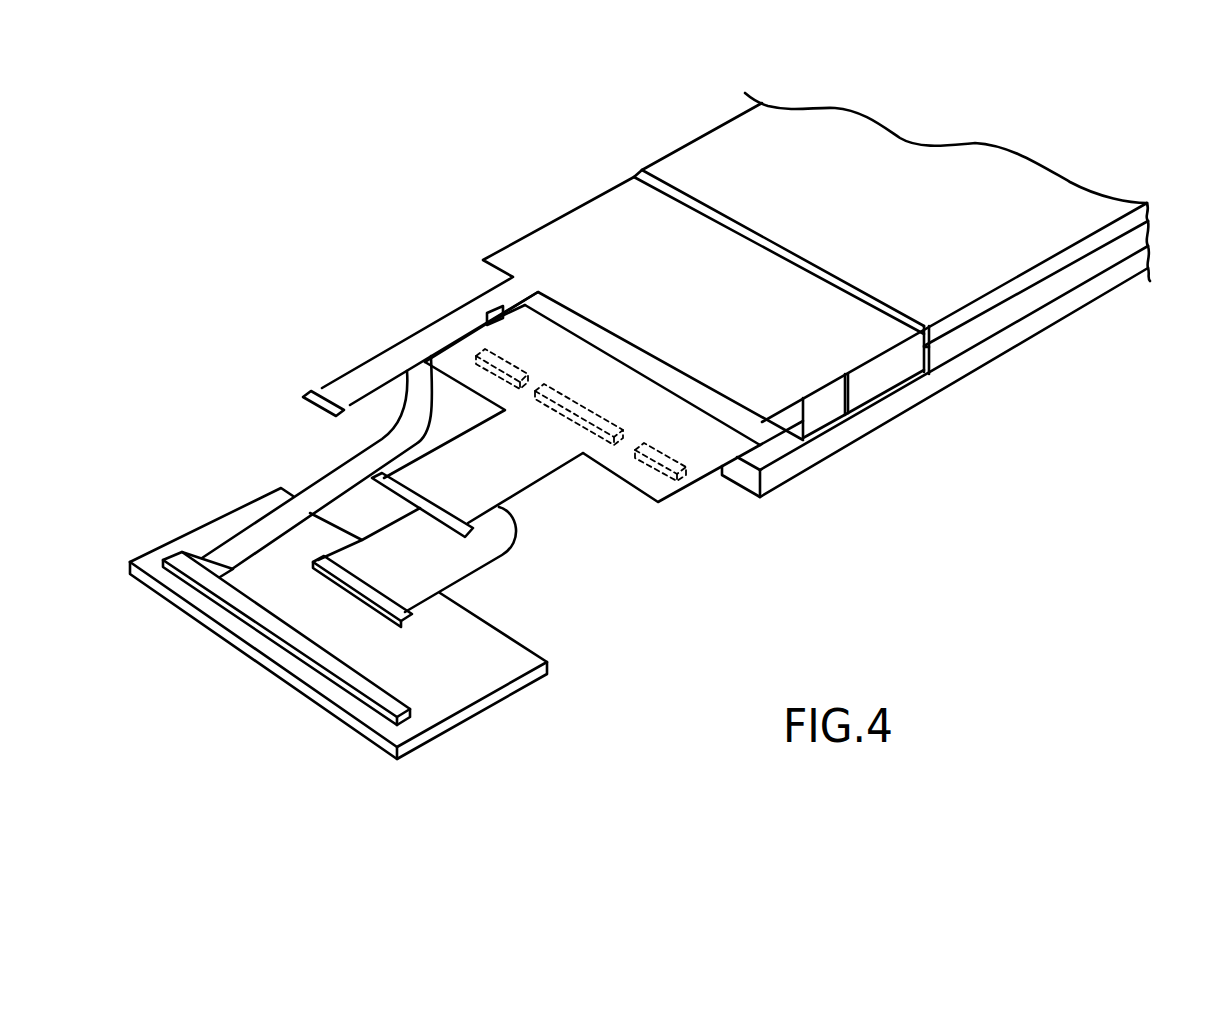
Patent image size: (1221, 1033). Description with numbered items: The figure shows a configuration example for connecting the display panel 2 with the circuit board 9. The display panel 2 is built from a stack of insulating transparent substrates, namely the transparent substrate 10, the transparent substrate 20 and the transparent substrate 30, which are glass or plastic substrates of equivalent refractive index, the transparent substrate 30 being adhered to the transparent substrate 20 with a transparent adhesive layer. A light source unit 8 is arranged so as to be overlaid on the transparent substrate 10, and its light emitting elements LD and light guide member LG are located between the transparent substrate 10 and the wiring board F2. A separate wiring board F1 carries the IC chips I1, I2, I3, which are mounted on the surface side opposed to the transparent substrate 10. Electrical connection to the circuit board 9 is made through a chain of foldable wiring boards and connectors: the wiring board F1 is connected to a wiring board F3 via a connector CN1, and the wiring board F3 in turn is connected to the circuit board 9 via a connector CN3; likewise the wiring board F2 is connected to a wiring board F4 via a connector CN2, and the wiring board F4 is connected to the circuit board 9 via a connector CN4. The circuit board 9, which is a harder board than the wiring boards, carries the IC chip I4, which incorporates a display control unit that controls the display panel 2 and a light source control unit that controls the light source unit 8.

The display panel 2 is at (1058, 174).
The light source unit 8 is at (622, 182).
The circuit board 9 is at (466, 718).
The transparent substrate 10 is at (1152, 262).
The transparent substrate 20 is at (1152, 237).
The transparent substrate 30 is at (1152, 211).
The wiring board F1 is at (706, 472).
The wiring board F2 is at (580, 214).
The wiring board F3 is at (516, 537).
The wiring board F4 is at (336, 473).
The connector CN1 is at (411, 493).
The connector CN2 is at (321, 394).
The connector CN3 is at (372, 596).
The connector CN4 is at (203, 557).
The IC chip I1 is at (508, 352).
The IC chip I2 is at (580, 402).
The IC chip I3 is at (666, 445).
The IC chip I4 is at (350, 678).
The light emitting element LD is at (830, 418).
The light guide member LG is at (882, 382).